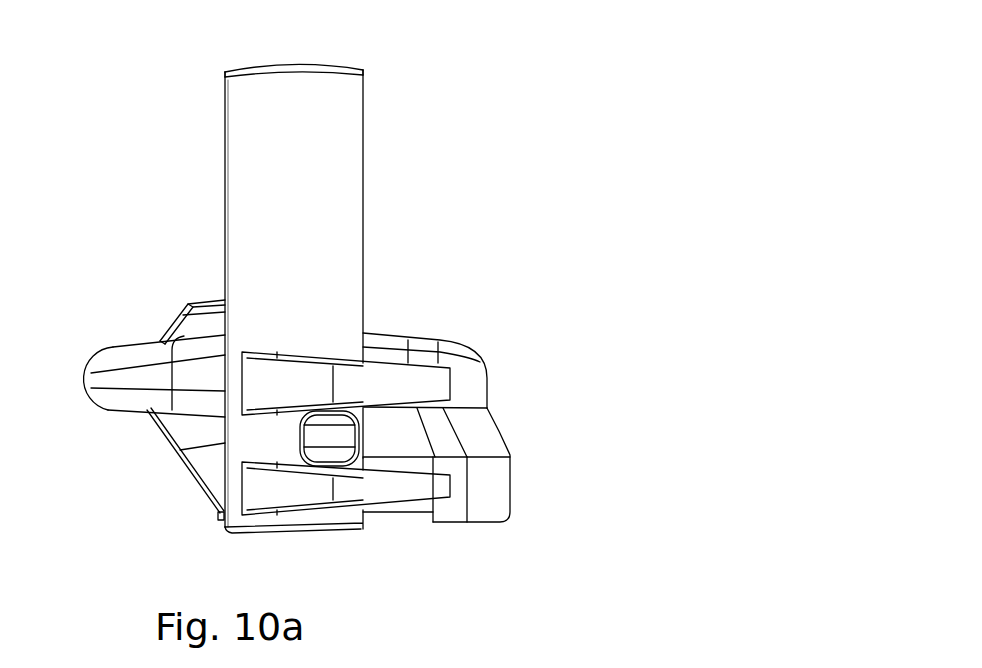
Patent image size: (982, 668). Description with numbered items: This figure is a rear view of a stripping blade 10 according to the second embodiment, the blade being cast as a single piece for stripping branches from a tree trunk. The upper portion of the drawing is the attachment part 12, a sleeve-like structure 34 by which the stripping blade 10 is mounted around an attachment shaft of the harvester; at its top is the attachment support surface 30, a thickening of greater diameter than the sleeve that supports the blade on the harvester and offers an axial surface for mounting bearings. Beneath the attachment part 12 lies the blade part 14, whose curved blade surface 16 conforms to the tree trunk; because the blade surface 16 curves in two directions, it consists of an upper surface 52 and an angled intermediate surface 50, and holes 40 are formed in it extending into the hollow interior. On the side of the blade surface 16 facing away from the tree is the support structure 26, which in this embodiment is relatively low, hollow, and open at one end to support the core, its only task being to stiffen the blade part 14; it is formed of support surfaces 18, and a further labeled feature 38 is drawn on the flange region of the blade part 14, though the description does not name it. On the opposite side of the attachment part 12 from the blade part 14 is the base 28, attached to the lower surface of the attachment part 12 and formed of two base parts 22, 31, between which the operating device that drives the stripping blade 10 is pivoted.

The stripping blade 10 is at (632, 183).
The attachment part 12 is at (374, 165).
The blade part 14 is at (388, 308).
The blade surface 16 is at (424, 360).
The support surfaces 18 is at (188, 330).
The base part 22 is at (373, 488).
The support structure 26 is at (152, 404).
The base 28 is at (420, 518).
The attachment support surface 30 is at (262, 63).
The base part 31 is at (433, 383).
The sleeve-like structure 34 is at (348, 220).
The flange crease 38 is at (110, 380).
The holes 40 is at (317, 438).
The intermediate surface 50 is at (490, 438).
The upper surface 52 is at (470, 370).